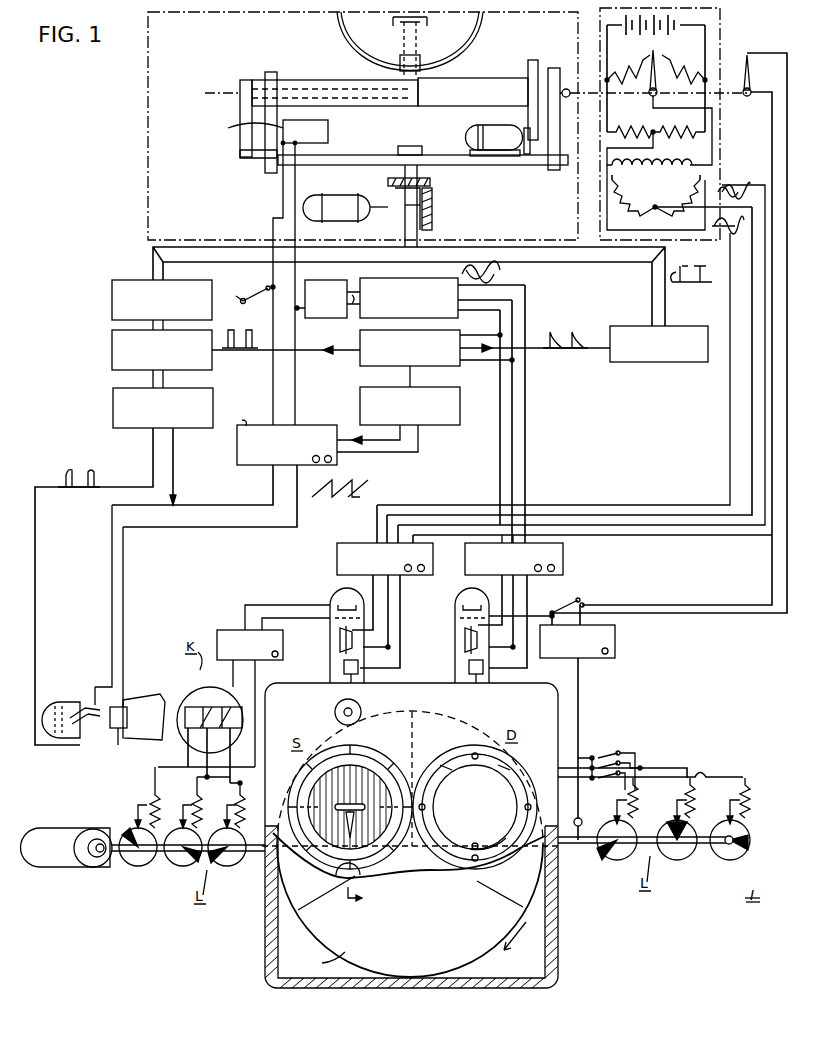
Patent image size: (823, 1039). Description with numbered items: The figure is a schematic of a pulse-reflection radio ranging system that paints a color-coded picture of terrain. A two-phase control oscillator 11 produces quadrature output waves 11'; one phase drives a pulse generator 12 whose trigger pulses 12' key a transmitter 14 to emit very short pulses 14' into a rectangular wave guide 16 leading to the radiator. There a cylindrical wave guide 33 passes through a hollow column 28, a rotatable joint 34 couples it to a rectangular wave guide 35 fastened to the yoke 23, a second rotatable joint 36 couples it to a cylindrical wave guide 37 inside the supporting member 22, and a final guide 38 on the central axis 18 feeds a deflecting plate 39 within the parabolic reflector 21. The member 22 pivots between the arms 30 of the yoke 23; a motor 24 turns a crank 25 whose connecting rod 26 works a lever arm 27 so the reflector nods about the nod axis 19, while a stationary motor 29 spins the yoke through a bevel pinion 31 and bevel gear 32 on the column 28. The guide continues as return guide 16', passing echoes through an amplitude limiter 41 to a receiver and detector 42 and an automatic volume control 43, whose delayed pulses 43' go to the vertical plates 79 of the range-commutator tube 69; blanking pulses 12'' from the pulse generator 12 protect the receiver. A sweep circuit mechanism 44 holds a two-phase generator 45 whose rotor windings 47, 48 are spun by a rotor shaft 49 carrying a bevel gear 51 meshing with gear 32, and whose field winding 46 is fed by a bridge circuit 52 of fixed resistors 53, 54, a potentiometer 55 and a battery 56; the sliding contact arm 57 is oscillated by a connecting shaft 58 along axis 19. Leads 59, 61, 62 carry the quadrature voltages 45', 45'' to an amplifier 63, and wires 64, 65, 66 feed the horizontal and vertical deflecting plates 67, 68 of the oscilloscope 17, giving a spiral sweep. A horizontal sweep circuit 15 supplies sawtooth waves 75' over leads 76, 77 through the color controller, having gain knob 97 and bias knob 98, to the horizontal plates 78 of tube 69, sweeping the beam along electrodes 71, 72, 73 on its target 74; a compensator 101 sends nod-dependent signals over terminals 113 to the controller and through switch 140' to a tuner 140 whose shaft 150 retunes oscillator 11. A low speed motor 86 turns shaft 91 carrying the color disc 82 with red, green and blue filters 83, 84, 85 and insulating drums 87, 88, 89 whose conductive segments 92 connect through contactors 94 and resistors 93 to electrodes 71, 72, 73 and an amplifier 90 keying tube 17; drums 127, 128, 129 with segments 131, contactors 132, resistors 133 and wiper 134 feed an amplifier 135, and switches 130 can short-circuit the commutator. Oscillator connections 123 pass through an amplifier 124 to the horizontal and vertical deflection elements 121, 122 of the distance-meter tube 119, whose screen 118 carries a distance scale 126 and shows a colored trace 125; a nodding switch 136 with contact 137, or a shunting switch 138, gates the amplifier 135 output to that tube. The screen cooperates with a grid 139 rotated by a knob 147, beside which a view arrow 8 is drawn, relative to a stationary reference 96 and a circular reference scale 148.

The nod axis 19 is at (228, 93).
The second rotatable joint 36 is at (258, 86).
The arms of the yoke 30 is at (272, 72).
The second cylindrical wave guide 37 is at (336, 82).
The deflecting plate 39 is at (398, 46).
The final rectangular wave guide section 38 is at (420, 52).
The parabolic reflector 21 is at (478, 30).
The lever arm 27 is at (531, 60).
The connecting shaft 58 is at (570, 90).
The supporting member 22 is at (468, 90).
The central axis 18 is at (410, 145).
The motor 24 is at (478, 132).
The connecting rod 26 is at (528, 116).
The compensator 101 is at (328, 132).
The yoke 23 is at (492, 160).
The crank 25 is at (535, 158).
The rotatable joint 34 is at (420, 165).
The rectangular wave guide 35 is at (253, 160).
The output terminals 113 is at (295, 188).
The bevel gear 32 is at (360, 195).
The bevel gear 51 is at (432, 186).
The hollow column 28 is at (434, 200).
The stationary motor 29 is at (345, 220).
The bevel drive pinion 31 is at (382, 222).
The cylindrical wave guide 33 is at (432, 222).
The rotor shaft 49 is at (450, 212).
The sweep circuit mechanism 44 is at (712, 20).
The battery 56 is at (638, 30).
The potentiometer 55 is at (658, 48).
The bridge circuit 52 is at (632, 81).
The sliding contact arm 57 is at (680, 107).
The fixed resistor 53 is at (626, 128).
The field winding 46 is at (668, 164).
The fixed resistor 54 is at (675, 136).
The two-phase generator 45 is at (679, 197).
The sinusoidal voltage 45' is at (581, 344).
The sinusoidal voltage 45'' is at (560, 358).
The rotor winding 47 is at (620, 206).
The rotor winding 48 is at (685, 205).
The switch 136 is at (745, 62).
The contact 137 is at (753, 54).
The return wave guide 16' is at (393, 310).
The rectangular wave guide 16 is at (637, 271).
The amplitude limiter 41 is at (112, 290).
The receiver and detector 42 is at (112, 355).
The automatic volume control 43 is at (146, 408).
The received pulses 43' is at (79, 469).
The switch 140' is at (249, 285).
The blanking pulses 12'' is at (237, 328).
The tuner 140 is at (327, 297).
The shaft 150 is at (355, 290).
The two-phase control oscillator 11 is at (409, 289).
The output waves 11' is at (492, 273).
The pulse generator 12 is at (411, 358).
The trigger pulses 12' is at (568, 333).
The horizontal sweep circuit 15 is at (462, 392).
The transmitter 14 is at (644, 351).
The transmitted pulses 14' is at (691, 282).
The output connections 123 is at (512, 365).
The lead 59 is at (750, 370).
The lead 61 is at (730, 395).
The lead 62 is at (765, 405).
The bias control knob 98 is at (332, 460).
The gain control knob 97 is at (310, 473).
The output lead 76 is at (273, 487).
The output lead 77 is at (297, 497).
The sawtooth waves 75' is at (349, 483).
The amplifier 63 is at (337, 558).
The amplifier 124 is at (562, 557).
The amplifier 90 is at (235, 630).
The amplifier 135 is at (610, 640).
The second switch 138 is at (562, 608).
The oscilloscope 17 is at (330, 606).
The wire 65 is at (373, 590).
The wire 64 is at (390, 590).
The wire 66 is at (399, 600).
The horizontal deflecting plates 67 is at (340, 640).
The vertical deflecting plates 68 is at (344, 666).
The cathode ray tube 119 is at (455, 617).
The horizontal deflection elements 121 is at (465, 640).
The vertical deflection elements 122 is at (469, 666).
The knob 147 is at (360, 716).
The color disc 82 is at (470, 966).
The blue filter 85 is at (420, 975).
The pivot 8 is at (357, 883).
The red filter 83 is at (268, 888).
The green filter 84 is at (557, 866).
The circular reference scale 148 is at (332, 775).
The grid 139 is at (360, 775).
The stationary reference 96 is at (360, 802).
The screen 118 is at (514, 760).
The scale of distance units 126 is at (462, 750).
The circular-segmental trace 125 is at (472, 862).
The vertical deflection plates 79 is at (88, 705).
The horizontal sweep plates 78 is at (118, 732).
The cathode ray tube 69 is at (147, 700).
The electrode 71 is at (195, 706).
The electrode 72 is at (210, 706).
The target area 74 is at (228, 706).
The electrode 73 is at (242, 708).
The low speed motor 86 is at (62, 868).
The shaft 91 is at (105, 862).
The insulating drum 87 is at (140, 866).
The insulating drum 88 is at (180, 866).
The insulating drum 89 is at (236, 866).
The conductive segment 92 is at (136, 812).
The filter-compensating resistor 93 is at (165, 790).
The contactor 94 is at (195, 798).
The insulating drum 127 is at (620, 860).
The insulating drum 128 is at (682, 860).
The insulating drum 129 is at (728, 860).
The conductive segments 131 is at (748, 844).
The wiper 134 is at (582, 820).
The switches 130 is at (598, 758).
The resistor 133 is at (640, 790).
The contactor 132 is at (665, 818).